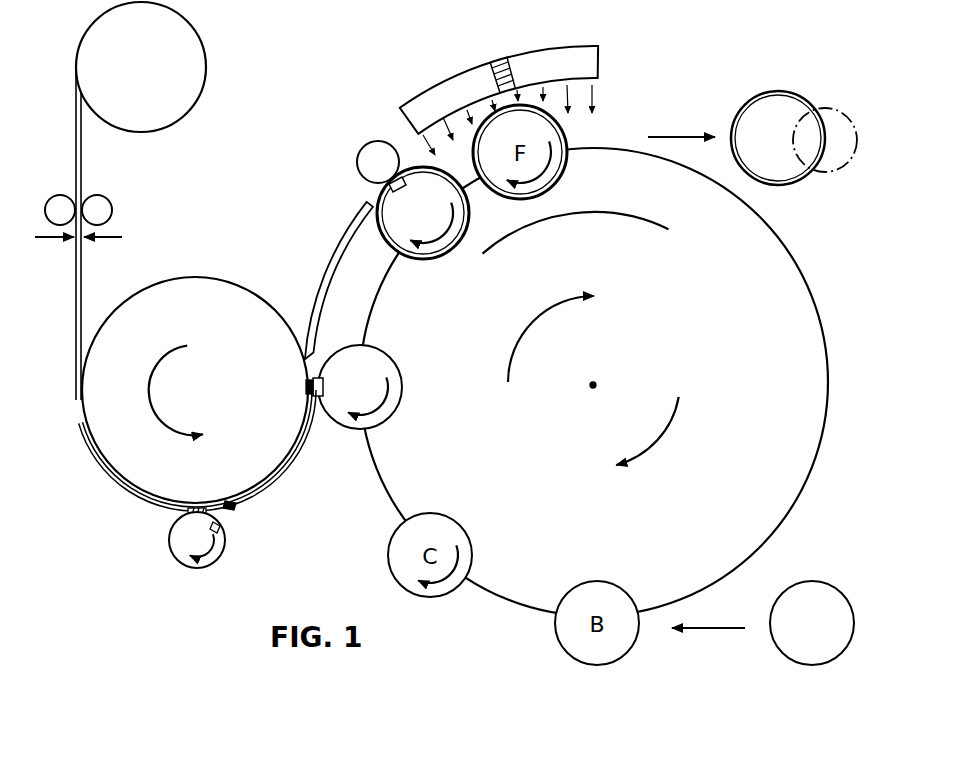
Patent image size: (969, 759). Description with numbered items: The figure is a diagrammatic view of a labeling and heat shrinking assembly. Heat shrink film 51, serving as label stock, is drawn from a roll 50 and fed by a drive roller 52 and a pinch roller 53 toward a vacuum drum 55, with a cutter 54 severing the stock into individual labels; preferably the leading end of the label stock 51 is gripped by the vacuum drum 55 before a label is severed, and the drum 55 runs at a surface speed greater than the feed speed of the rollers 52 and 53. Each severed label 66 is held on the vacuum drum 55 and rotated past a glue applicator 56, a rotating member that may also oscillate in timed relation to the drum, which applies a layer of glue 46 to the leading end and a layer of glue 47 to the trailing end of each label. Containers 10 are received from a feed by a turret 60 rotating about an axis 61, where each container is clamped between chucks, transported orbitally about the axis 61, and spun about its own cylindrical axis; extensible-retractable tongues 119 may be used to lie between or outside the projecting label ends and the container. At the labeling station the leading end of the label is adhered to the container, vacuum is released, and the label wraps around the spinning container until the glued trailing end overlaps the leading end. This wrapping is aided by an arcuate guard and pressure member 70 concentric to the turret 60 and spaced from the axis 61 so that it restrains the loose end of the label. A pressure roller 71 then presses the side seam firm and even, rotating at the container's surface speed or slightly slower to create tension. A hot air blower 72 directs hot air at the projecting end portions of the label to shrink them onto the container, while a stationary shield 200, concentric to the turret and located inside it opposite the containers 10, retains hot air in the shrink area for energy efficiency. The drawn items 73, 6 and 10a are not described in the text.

The roll of heat shrink film 50 is at (180, 28).
The heat shrink film 51 is at (104, 233).
The drive roller 52 is at (108, 206).
The pinch roller 53 is at (53, 197).
The cutter 54 is at (119, 237).
The vacuum drum 55 is at (212, 367).
The glue applicator 56 is at (210, 560).
The layer of glue 46 is at (186, 514).
The layer of glue 47 is at (232, 510).
The severed label 66 is at (113, 478).
The arcuate guard and pressure member 70 is at (328, 270).
The pressure roller 71 is at (380, 150).
The hot air blower 72 is at (530, 57).
The slit 73 is at (497, 58).
The extensible-retractable tongue 119 is at (323, 384).
The shield 200 is at (637, 217).
The axis 61 is at (593, 385).
The turret 60 is at (722, 372).
The toner image 6 is at (822, 108).
The charged sheet 10a is at (764, 105).
The container 10 is at (821, 660).